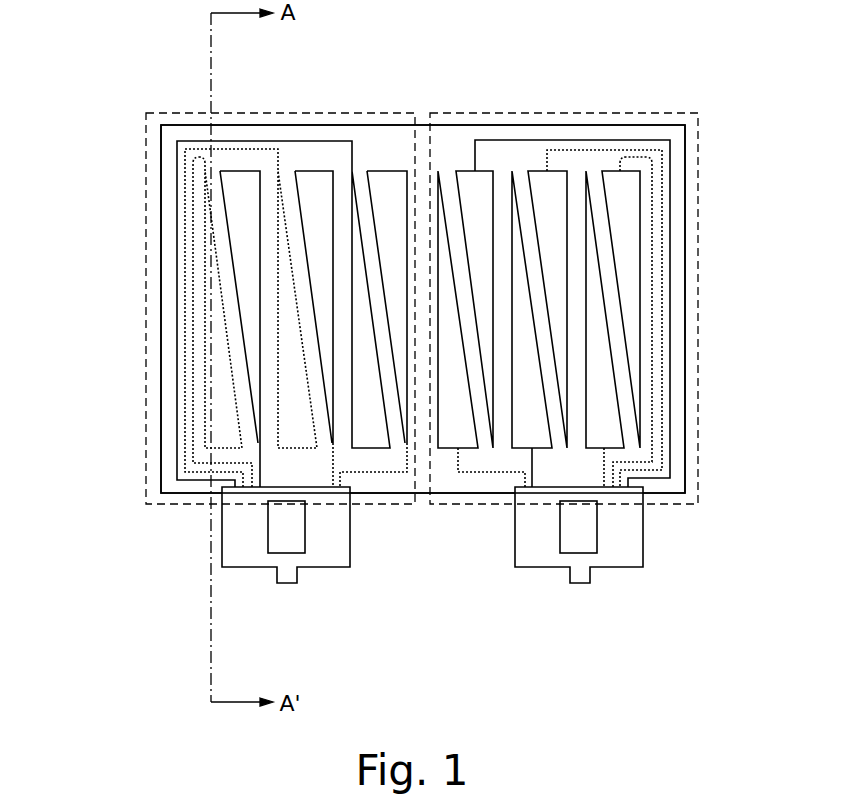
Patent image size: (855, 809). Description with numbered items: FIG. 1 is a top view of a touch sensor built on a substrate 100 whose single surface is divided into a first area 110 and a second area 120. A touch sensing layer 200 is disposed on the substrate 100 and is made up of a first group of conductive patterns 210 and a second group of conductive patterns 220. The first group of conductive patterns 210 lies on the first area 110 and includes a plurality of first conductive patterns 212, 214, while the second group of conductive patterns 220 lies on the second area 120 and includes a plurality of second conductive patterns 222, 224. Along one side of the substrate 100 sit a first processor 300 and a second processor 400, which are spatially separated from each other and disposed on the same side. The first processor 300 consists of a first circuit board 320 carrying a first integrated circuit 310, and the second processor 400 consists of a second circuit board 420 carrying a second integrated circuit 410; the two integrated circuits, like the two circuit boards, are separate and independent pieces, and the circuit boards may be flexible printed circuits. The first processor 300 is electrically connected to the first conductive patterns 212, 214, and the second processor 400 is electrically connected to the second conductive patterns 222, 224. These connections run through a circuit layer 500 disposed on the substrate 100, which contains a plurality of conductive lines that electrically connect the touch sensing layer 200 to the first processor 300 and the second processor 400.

The substrate 100 is at (423, 376).
The first area 110 is at (385, 493).
The second area 120 is at (550, 353).
The touch sensing layer 200 is at (422, 252).
The first group of conductive patterns 210 is at (289, 272).
The first conductive pattern 212 is at (278, 190).
The first conductive pattern 214 is at (313, 170).
The second group of conductive patterns 220 is at (564, 272).
The second conductive pattern 222 is at (612, 171).
The second conductive pattern 224 is at (586, 171).
The first processor 300 is at (293, 581).
The first integrated circuit 310 is at (263, 565).
The first circuit board 320 is at (327, 568).
The second processor 400 is at (571, 581).
The second integrated circuit 410 is at (600, 565).
The second circuit board 420 is at (537, 570).
The circuit layer 500 is at (163, 160).